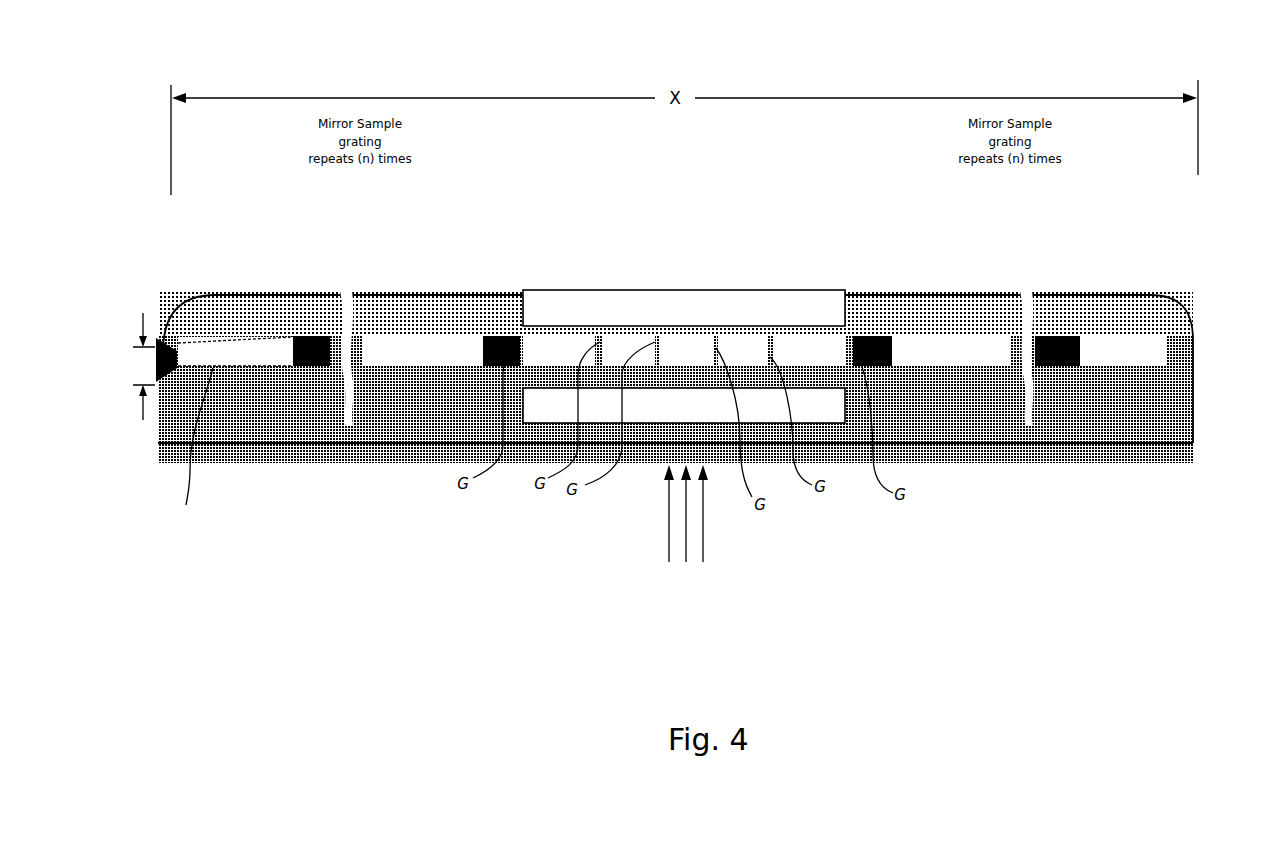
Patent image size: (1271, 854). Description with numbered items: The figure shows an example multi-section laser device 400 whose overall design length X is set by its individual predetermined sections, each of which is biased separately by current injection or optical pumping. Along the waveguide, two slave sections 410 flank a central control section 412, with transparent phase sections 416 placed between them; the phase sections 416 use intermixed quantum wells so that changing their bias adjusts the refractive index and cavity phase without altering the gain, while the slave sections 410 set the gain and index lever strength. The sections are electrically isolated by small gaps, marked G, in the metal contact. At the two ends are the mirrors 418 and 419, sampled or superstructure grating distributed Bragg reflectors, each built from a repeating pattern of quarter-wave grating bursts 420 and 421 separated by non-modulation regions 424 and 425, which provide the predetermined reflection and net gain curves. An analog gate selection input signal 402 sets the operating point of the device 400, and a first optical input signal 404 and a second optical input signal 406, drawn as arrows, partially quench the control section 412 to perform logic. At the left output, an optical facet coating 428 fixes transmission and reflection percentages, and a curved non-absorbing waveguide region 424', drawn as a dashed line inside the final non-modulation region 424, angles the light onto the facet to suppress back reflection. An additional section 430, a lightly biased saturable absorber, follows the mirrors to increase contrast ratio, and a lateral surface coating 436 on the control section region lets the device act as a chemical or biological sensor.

The device 400 is at (214, 56).
The analog gate selection input signal 402 is at (684, 550).
The first optical input signal 404 is at (665, 512).
The second optical input signal 406 is at (708, 530).
The slave section 410 is at (813, 342).
The control section 412 is at (672, 347).
The phase section 416 is at (737, 337).
The mirror 418 is at (392, 296).
The mirror 419 is at (1041, 296).
The quarter-wave grating burst 420 is at (484, 336).
The quarter-wave grating burst 421 is at (1040, 353).
The non-modulation region 424 is at (330, 291).
The non-absorbing waveguide region 424' is at (199, 446).
The non-modulation region 425 is at (1140, 340).
The optical facet coating 428 is at (156, 370).
The additional section 430 is at (1175, 363).
The lateral surface coating 436 is at (665, 318).